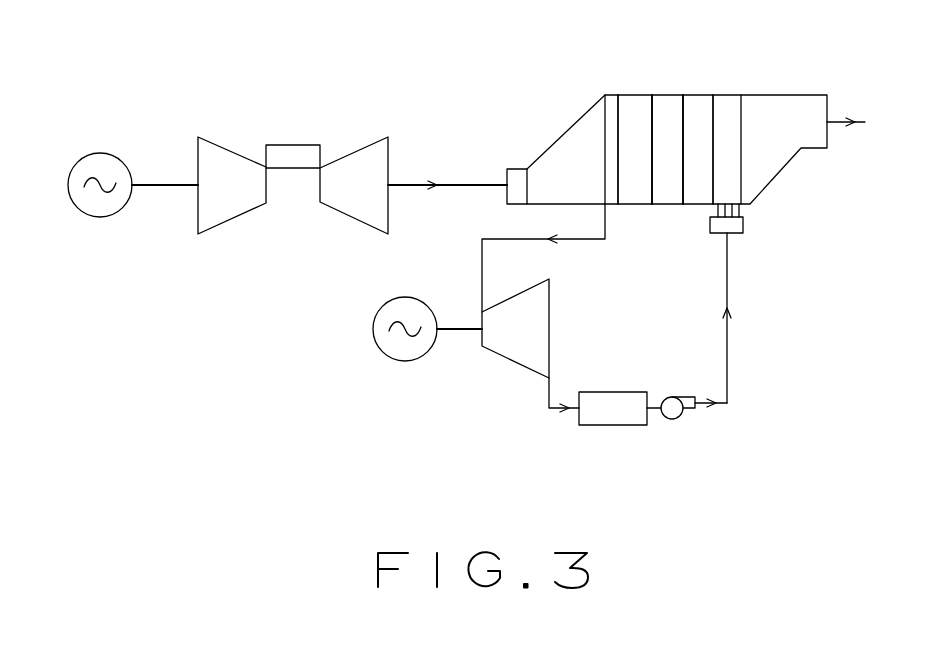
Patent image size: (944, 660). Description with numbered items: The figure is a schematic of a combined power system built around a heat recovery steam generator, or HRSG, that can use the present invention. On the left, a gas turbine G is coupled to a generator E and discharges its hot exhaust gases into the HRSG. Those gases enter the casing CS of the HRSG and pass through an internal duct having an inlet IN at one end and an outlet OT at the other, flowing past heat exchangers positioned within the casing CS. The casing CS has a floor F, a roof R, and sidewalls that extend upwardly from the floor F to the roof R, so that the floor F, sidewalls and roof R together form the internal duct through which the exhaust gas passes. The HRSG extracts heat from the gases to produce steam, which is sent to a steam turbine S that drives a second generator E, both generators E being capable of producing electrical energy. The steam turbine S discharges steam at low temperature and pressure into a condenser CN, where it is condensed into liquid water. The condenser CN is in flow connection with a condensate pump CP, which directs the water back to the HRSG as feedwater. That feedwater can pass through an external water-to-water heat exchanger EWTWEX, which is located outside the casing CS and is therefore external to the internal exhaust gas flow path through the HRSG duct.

The generator E is at (83, 222).
The gas turbine G is at (296, 232).
The inlet IN is at (507, 181).
The heat recovery steam generator HRSG is at (674, 62).
The roof R is at (656, 95).
The casing CS is at (705, 85).
The outlet OT is at (862, 123).
The floor F is at (672, 204).
The external water-to-water heat exchanger EWTWEX is at (752, 227).
The steam turbine S is at (508, 377).
The condenser CN is at (620, 425).
The condensate pump CP is at (678, 418).